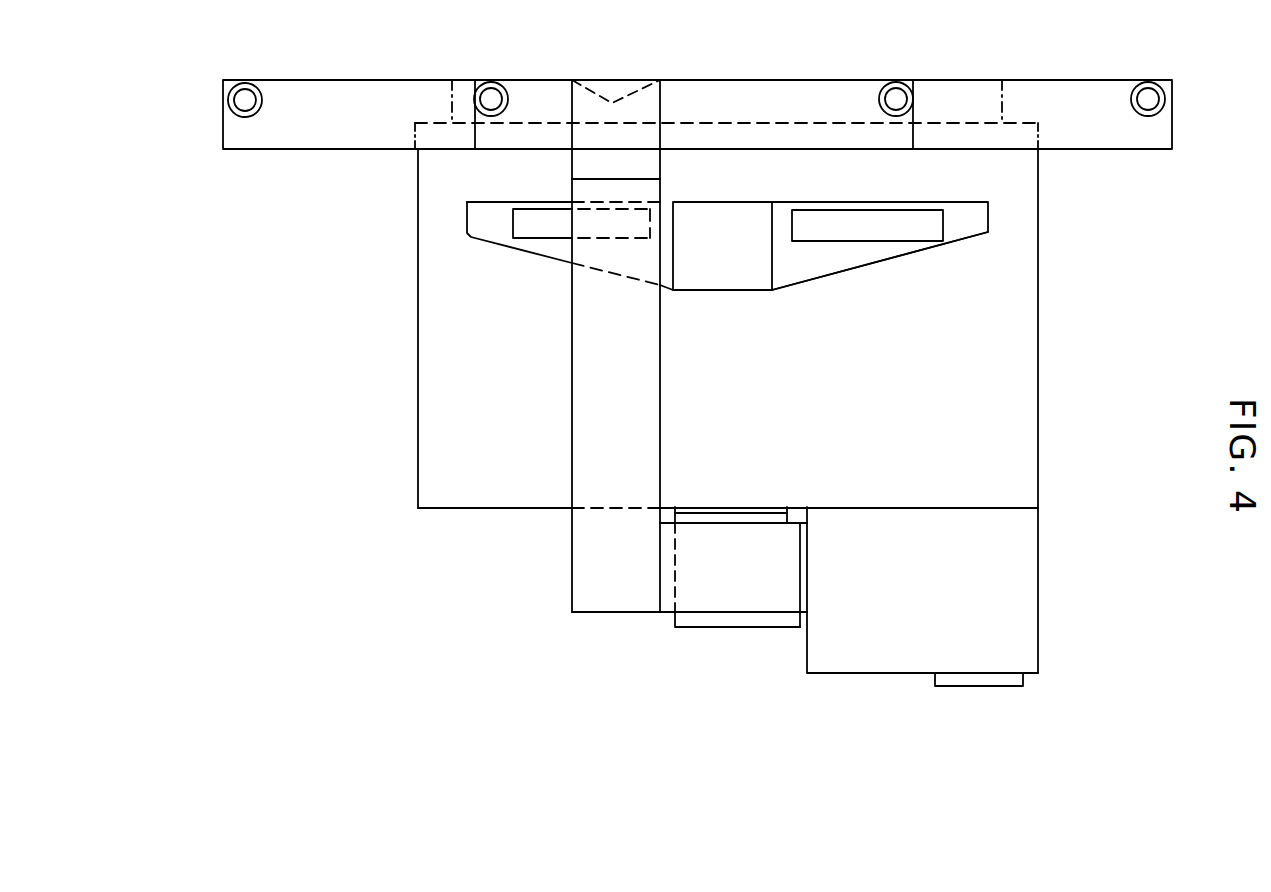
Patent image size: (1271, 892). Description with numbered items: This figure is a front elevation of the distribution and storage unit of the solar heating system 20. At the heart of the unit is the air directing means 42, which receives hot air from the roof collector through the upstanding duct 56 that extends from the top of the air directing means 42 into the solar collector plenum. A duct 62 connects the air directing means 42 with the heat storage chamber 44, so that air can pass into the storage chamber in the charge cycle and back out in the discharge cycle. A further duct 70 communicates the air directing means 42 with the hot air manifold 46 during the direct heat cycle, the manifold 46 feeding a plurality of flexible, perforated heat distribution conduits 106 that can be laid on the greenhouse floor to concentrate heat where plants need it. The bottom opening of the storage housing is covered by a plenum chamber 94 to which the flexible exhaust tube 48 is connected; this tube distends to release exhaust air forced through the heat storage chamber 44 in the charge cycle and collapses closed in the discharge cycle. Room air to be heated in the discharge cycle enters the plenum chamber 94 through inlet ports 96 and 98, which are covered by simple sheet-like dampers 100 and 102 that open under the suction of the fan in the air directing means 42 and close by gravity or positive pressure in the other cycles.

The solar heating system 20 is at (568, 629).
The air directing means 42 is at (857, 675).
The heat storage chamber 44 is at (418, 427).
The hot air manifold 46 is at (330, 150).
The exhaust tube 48 is at (726, 284).
The upstanding duct 56 is at (940, 687).
The duct 62 is at (718, 627).
The duct 70 is at (572, 412).
The plenum chamber 94 is at (825, 278).
The inlet port 96 is at (928, 243).
The inlet port 98 is at (522, 240).
The sheet-like damper 100 is at (875, 233).
The sheet-like damper 102 is at (550, 228).
The heat distribution conduit 106 is at (1133, 93).